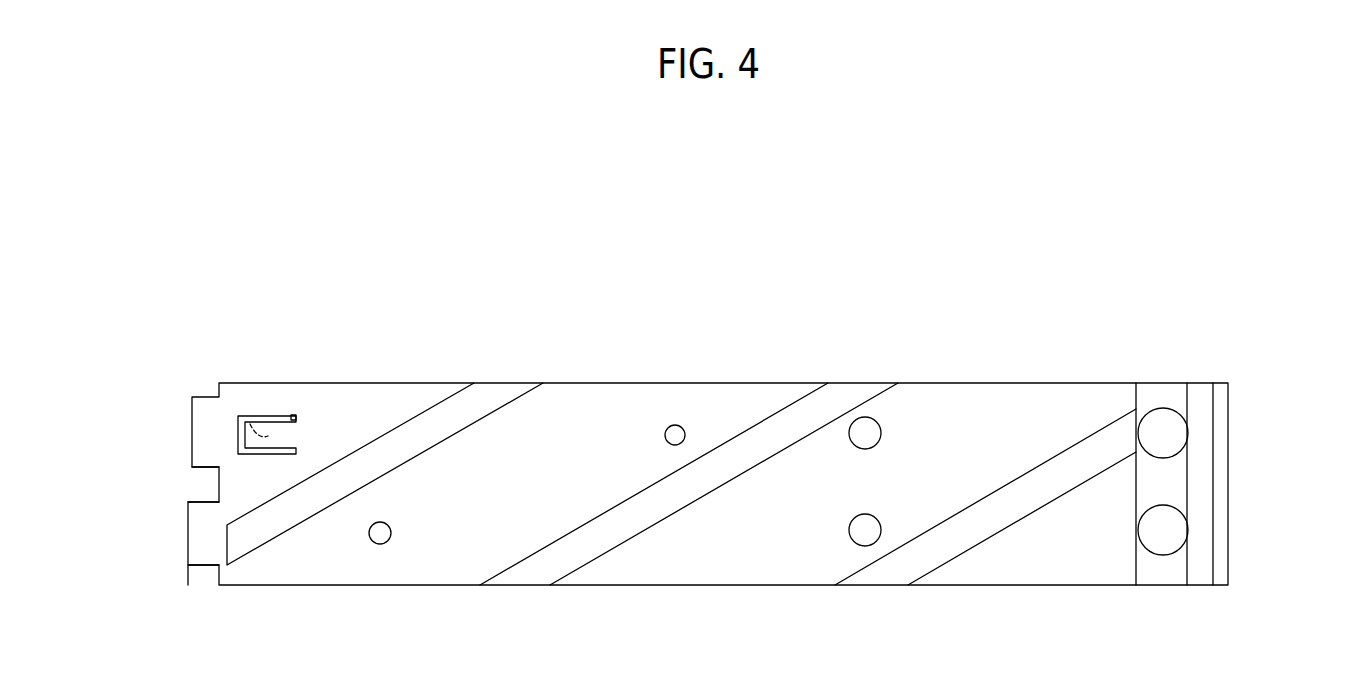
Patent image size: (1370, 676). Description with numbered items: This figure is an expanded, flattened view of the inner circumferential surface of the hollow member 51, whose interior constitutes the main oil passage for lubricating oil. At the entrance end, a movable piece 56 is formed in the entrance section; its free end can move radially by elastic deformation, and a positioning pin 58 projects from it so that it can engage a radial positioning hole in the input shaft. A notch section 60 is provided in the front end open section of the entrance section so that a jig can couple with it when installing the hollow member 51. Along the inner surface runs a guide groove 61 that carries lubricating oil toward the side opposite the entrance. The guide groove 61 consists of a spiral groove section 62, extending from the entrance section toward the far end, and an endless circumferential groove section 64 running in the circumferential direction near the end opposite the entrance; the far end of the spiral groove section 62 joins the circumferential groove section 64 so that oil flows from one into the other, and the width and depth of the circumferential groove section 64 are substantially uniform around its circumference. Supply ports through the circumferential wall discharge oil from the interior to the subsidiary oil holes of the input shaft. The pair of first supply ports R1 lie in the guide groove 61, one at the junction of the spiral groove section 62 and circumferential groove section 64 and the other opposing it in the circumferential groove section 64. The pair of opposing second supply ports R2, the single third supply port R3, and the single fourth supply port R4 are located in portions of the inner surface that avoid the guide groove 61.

The hollow member 51 is at (1033, 300).
The movable piece 56 is at (292, 417).
The positioning pin 58 is at (263, 437).
The notch section 60 is at (205, 493).
The guide groove 61 is at (433, 408).
The spiral groove section 62 is at (713, 468).
The circumferential groove section 64 is at (1187, 398).
The first supply port R1 is at (1173, 437).
The second supply port R2 is at (871, 434).
The third supply port R3 is at (674, 433).
The fourth supply port R4 is at (379, 534).